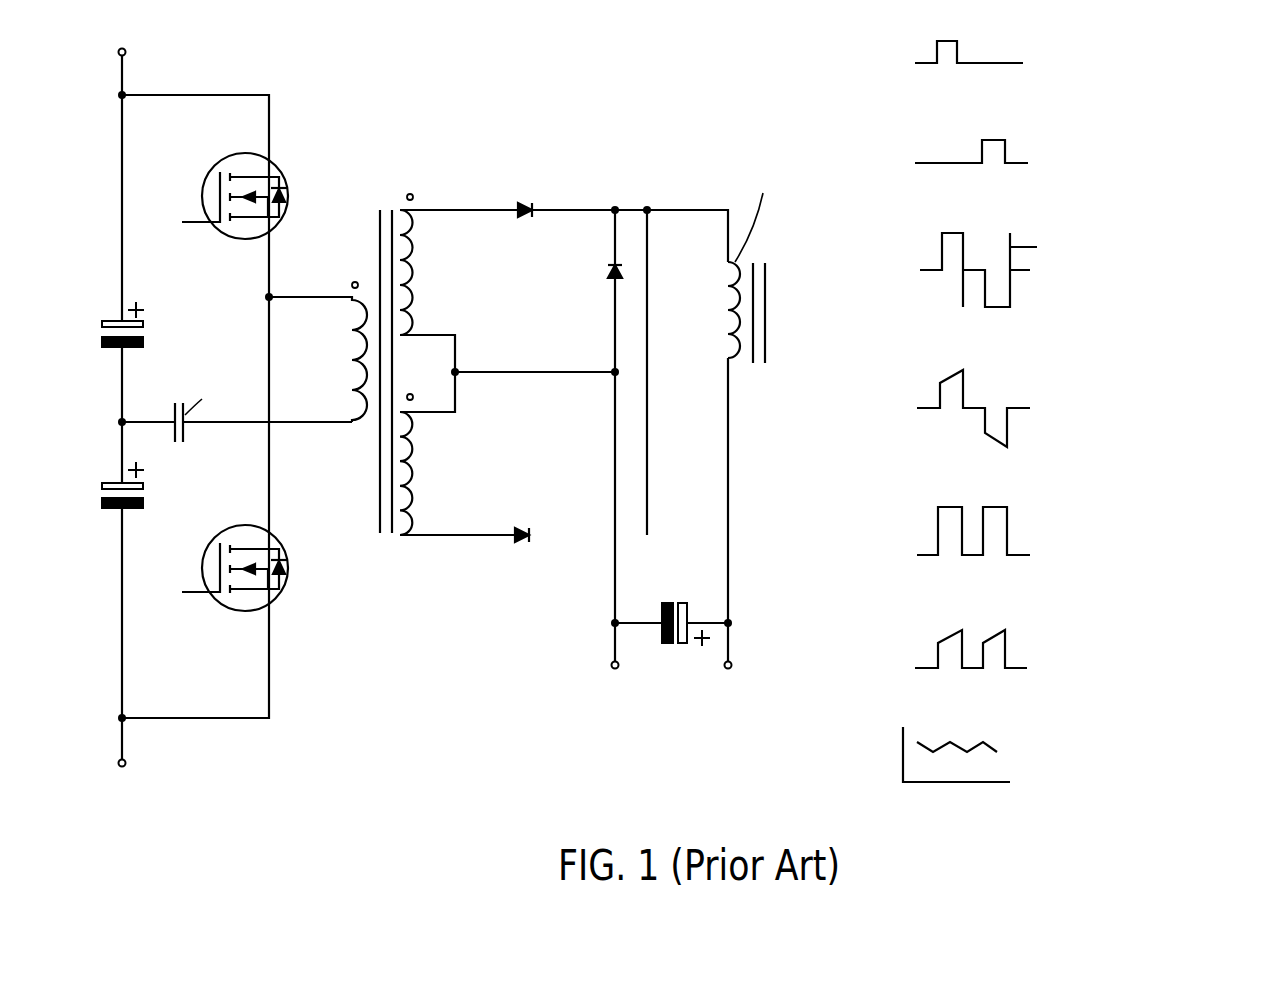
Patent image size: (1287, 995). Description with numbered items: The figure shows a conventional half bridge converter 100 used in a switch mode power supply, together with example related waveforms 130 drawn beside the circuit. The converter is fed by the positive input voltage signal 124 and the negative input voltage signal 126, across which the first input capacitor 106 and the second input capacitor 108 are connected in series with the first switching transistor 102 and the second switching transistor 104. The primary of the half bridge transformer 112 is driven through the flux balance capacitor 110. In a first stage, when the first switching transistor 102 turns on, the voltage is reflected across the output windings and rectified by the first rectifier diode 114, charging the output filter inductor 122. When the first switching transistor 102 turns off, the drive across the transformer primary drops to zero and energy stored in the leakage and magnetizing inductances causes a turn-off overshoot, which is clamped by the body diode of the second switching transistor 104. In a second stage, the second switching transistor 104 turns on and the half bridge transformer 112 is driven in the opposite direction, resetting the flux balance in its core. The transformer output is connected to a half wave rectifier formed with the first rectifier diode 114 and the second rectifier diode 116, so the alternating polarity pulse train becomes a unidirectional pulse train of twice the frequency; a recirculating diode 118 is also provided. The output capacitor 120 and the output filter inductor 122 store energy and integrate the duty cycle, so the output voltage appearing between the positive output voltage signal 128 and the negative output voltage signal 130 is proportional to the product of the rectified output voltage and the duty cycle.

The half bridge converter 100 is at (488, 104).
The switching transistor Q1 102 is at (283, 225).
The switching transistor Q2 104 is at (283, 597).
The capacitor C1 In 106 is at (118, 320).
The capacitor C2 In 108 is at (105, 509).
The flux balance capacitor 110 is at (185, 431).
The half bridge transformer 112 is at (405, 533).
The diode CR1 114 is at (530, 207).
The diode CR2 116 is at (528, 540).
The recirculating diode 118 is at (610, 265).
The capacitor C Out 120 is at (688, 615).
The output filter inductor 122 is at (733, 310).
The voltage signal +VIn 124 is at (168, 39).
The voltage signal −VIn 126 is at (165, 782).
The voltage signal +VOut 128 is at (733, 700).
The voltage signal −VOut 130 is at (603, 700).